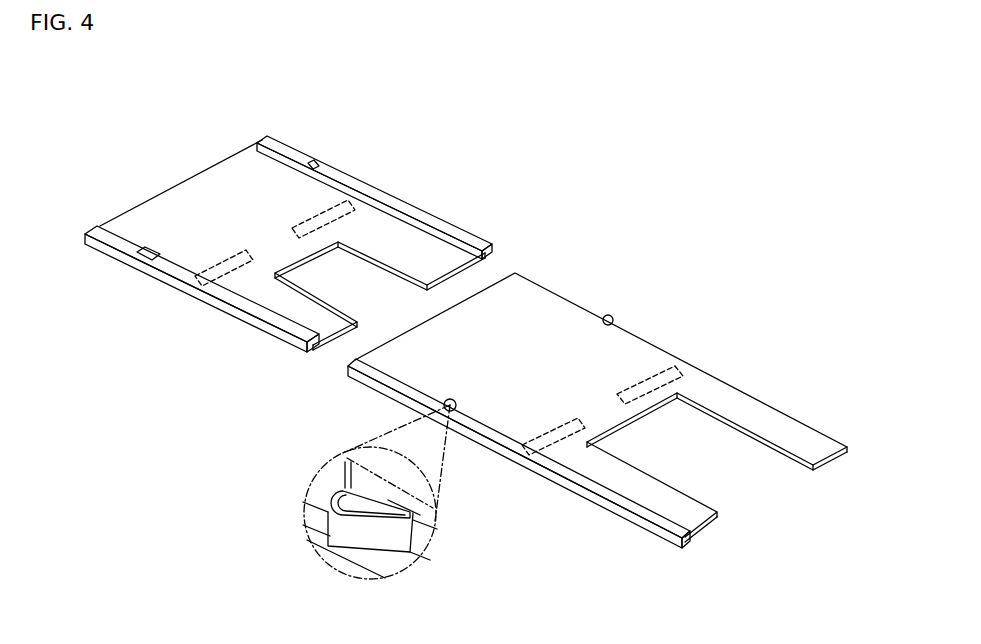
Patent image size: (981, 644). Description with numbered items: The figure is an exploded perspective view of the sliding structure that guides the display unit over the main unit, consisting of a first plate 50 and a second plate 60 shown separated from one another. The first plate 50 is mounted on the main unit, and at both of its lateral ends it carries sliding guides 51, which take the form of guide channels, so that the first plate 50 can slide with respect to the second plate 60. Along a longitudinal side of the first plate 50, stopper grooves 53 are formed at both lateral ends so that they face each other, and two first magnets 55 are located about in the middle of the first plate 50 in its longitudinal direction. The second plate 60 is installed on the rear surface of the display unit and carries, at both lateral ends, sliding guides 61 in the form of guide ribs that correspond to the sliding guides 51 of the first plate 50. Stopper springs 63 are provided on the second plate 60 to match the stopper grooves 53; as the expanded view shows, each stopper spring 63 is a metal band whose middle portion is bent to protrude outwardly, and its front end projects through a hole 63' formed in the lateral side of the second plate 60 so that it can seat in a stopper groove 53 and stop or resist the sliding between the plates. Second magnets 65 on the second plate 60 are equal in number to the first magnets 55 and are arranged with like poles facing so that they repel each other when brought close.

The first plate 50 is at (278, 264).
The sliding guides 51 is at (302, 356).
The stopper grooves 53 is at (314, 163).
The first magnets 55 is at (310, 205).
The second plate 60 is at (540, 426).
The sliding guides 61 is at (687, 542).
The stopper springs 63 is at (345, 489).
The holes 63' is at (454, 512).
The second magnets 65 is at (558, 422).